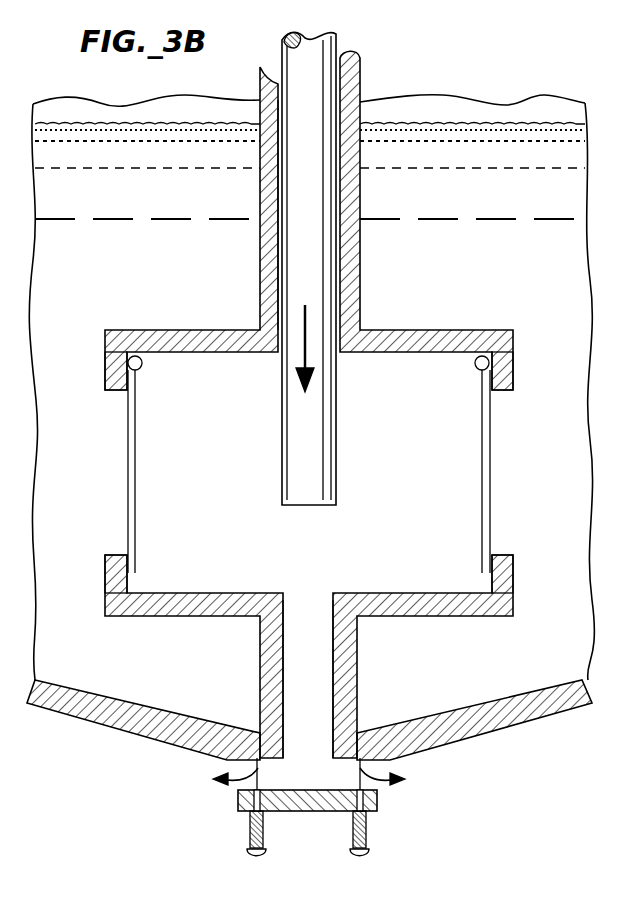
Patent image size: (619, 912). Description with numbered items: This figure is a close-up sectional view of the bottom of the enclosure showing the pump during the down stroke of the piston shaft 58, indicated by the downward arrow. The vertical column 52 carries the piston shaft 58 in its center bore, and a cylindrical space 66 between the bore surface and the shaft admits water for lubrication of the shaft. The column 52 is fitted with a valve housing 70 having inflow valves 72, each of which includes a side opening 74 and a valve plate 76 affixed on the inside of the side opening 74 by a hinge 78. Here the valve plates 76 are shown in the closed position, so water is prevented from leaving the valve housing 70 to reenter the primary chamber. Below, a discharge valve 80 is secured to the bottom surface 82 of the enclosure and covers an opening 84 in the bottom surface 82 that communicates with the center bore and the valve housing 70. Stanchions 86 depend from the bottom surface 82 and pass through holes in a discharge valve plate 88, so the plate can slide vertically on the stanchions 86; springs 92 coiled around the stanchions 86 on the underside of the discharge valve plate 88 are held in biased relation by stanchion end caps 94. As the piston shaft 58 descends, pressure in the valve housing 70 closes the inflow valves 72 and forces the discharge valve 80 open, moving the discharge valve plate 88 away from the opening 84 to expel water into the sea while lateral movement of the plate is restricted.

The vertical column 52 is at (358, 272).
The piston shaft 58 is at (310, 208).
The cylindrical space 66 is at (272, 284).
The valve housing 70 is at (410, 610).
The inflow valve 72 is at (527, 342).
The side opening 74 is at (115, 388).
The valve plate 76 is at (140, 480).
The hinge 78 is at (478, 366).
The discharge valve 80 is at (220, 810).
The bottom surface 82 is at (490, 730).
The opening 84 is at (310, 700).
The stanchions 86 is at (225, 766).
The discharge valve plate 88 is at (380, 796).
The springs 92 is at (263, 815).
The stanchion end caps 94 is at (368, 855).